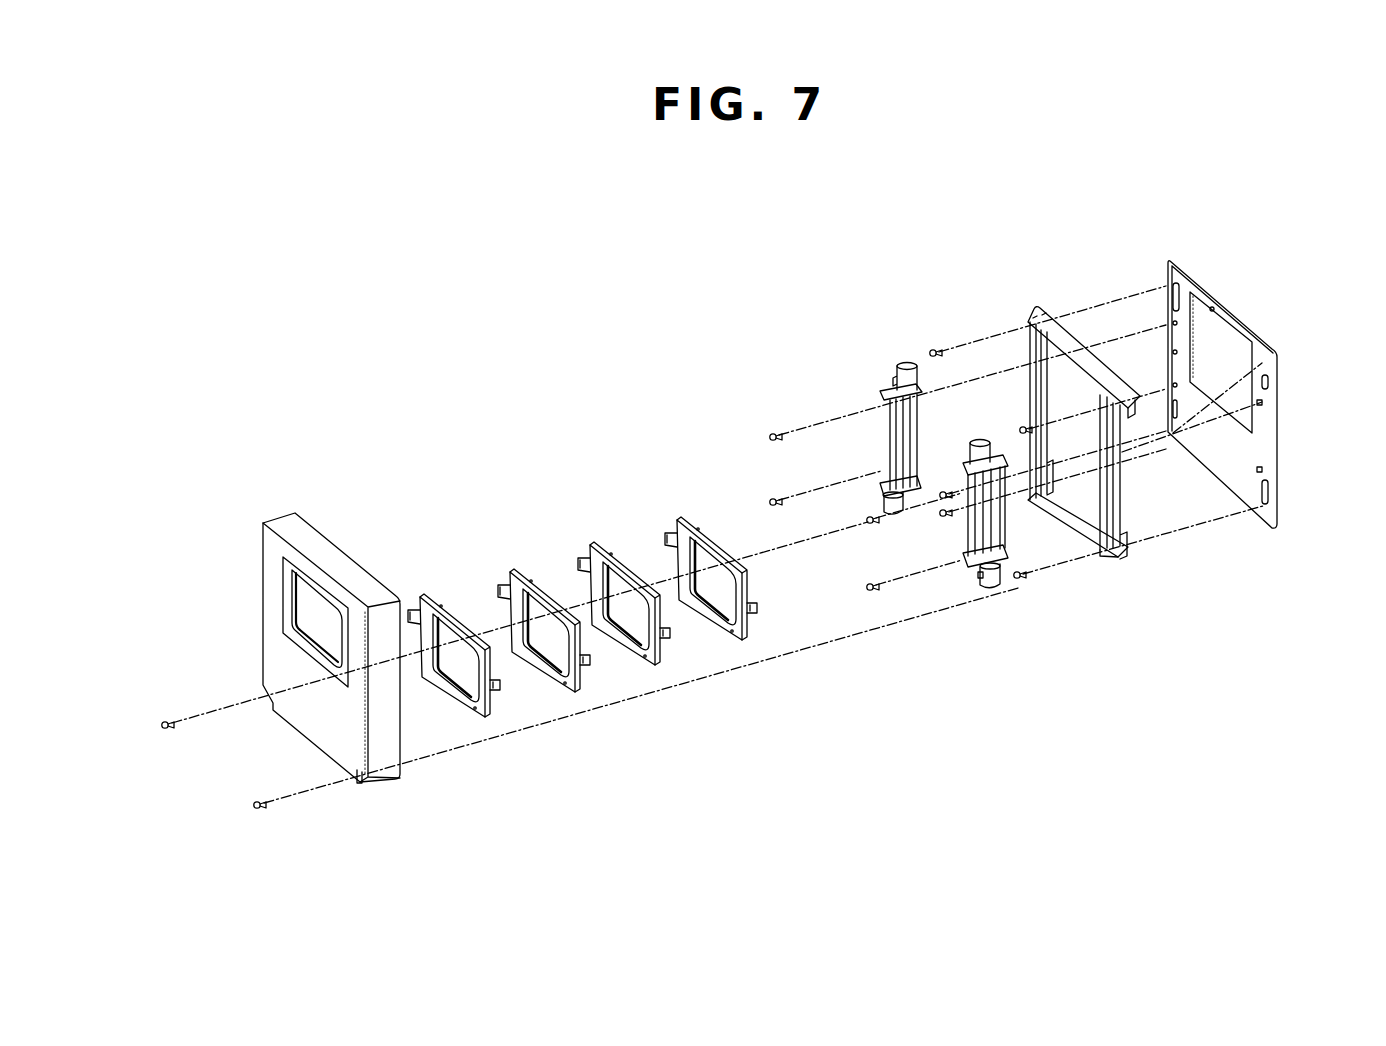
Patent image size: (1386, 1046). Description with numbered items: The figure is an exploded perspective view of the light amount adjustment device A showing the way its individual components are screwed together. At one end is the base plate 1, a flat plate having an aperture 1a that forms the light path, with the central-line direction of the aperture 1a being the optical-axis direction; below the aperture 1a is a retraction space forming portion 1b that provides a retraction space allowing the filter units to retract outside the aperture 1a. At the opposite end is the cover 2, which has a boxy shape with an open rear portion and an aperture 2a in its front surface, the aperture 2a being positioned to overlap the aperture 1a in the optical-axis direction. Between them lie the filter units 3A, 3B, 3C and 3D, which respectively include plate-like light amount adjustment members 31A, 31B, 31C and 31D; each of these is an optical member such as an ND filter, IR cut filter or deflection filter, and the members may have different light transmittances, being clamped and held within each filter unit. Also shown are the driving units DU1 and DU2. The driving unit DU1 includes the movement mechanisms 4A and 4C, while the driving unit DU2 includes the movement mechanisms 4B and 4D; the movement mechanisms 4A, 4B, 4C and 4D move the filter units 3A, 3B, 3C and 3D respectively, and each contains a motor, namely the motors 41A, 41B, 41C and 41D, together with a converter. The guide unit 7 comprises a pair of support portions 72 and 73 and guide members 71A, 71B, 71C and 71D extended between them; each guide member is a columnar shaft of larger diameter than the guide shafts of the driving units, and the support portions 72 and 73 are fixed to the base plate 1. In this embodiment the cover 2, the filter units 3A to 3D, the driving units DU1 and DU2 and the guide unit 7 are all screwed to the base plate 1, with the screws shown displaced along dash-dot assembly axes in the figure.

The light amount adjustment device A is at (333, 407).
The base plate 1 is at (1158, 253).
The aperture 1a is at (1228, 345).
The retraction space forming portion 1b is at (1212, 445).
The cover 2 is at (335, 503).
The aperture 2a is at (333, 608).
The filter unit 3A is at (683, 505).
The filter unit 3B is at (592, 525).
The filter unit 3C is at (527, 558).
The filter unit 3D is at (442, 575).
The light amount adjustment member 31A is at (717, 610).
The light amount adjustment member 31B is at (634, 640).
The light amount adjustment member 31C is at (548, 655).
The light amount adjustment member 31D is at (461, 669).
The driving unit DU1 is at (895, 338).
The driving unit DU2 is at (1030, 648).
The movement mechanism 4A is at (918, 352).
The movement mechanism 4B is at (990, 597).
The movement mechanism 4C is at (880, 531).
The movement mechanism 4D is at (983, 438).
The motor 41A is at (893, 375).
The motor 41B is at (1005, 585).
The motor 41C is at (881, 493).
The motor 41D is at (973, 443).
The guide unit 7 is at (1038, 284).
The guide member 71A is at (1115, 495).
The guide member 71B is at (1032, 385).
The guide member 71C is at (1104, 553).
The guide member 71D is at (1043, 373).
The support portion 72 is at (1060, 340).
The support portion 73 is at (1123, 553).